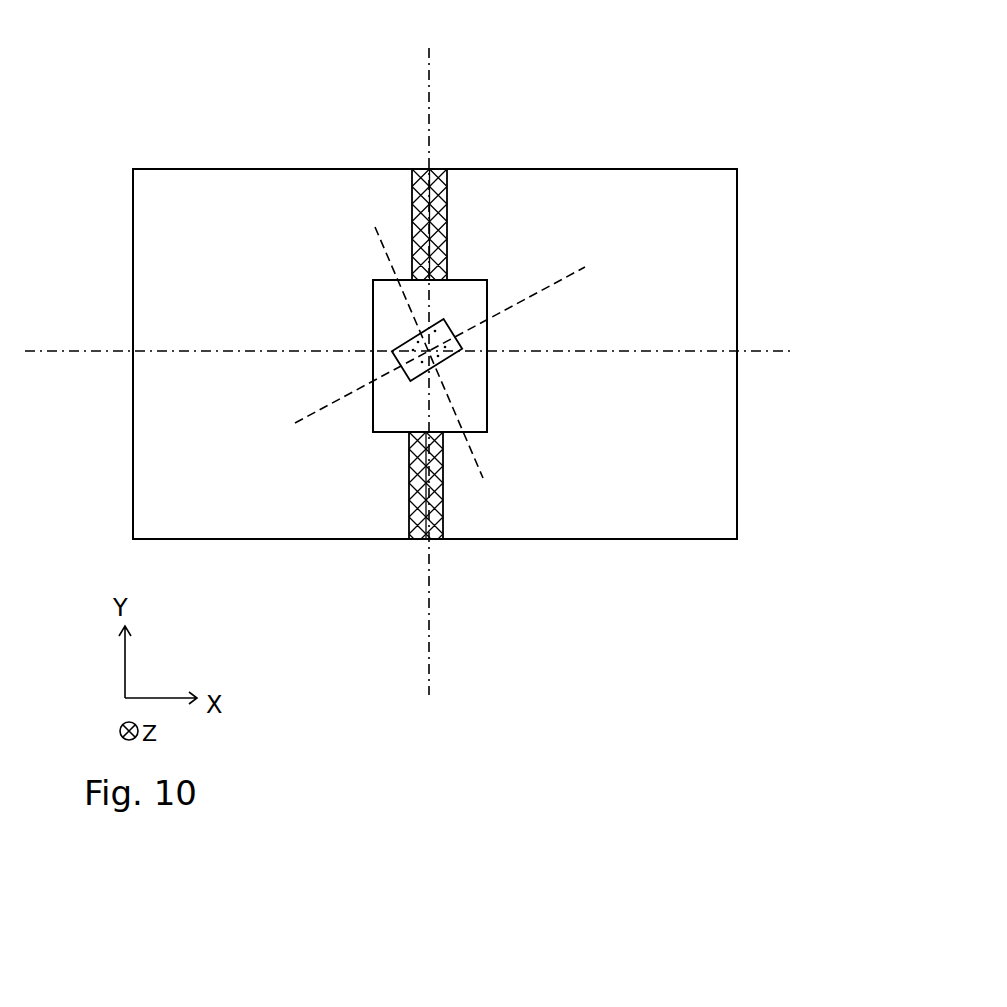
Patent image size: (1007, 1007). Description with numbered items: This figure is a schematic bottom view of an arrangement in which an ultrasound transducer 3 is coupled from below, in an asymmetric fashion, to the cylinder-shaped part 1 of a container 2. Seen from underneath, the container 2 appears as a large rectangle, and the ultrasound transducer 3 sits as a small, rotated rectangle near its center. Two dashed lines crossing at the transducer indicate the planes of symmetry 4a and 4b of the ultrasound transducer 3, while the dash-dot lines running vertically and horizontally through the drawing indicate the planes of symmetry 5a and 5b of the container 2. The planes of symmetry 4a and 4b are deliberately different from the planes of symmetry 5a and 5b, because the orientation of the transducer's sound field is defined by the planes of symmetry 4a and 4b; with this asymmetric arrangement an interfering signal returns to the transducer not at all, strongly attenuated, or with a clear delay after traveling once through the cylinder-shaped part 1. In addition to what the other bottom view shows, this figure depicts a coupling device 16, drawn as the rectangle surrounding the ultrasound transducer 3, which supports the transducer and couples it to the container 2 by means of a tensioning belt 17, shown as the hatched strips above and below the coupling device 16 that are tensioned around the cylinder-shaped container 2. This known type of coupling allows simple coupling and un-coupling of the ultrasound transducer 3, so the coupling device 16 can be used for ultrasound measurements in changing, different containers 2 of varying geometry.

The cylinder-shaped part 1 is at (435, 333).
The container 2 is at (665, 167).
The ultrasound transducer 3 is at (408, 383).
The plane of symmetry of the ultrasound transducer 4a is at (409, 338).
The plane of symmetry of the ultrasound transducer 4b is at (458, 335).
The plane of symmetry of the container 5a is at (428, 357).
The plane of symmetry of the container 5b is at (431, 358).
The coupling device 16 is at (488, 408).
The tensioning belt 17 is at (448, 208).